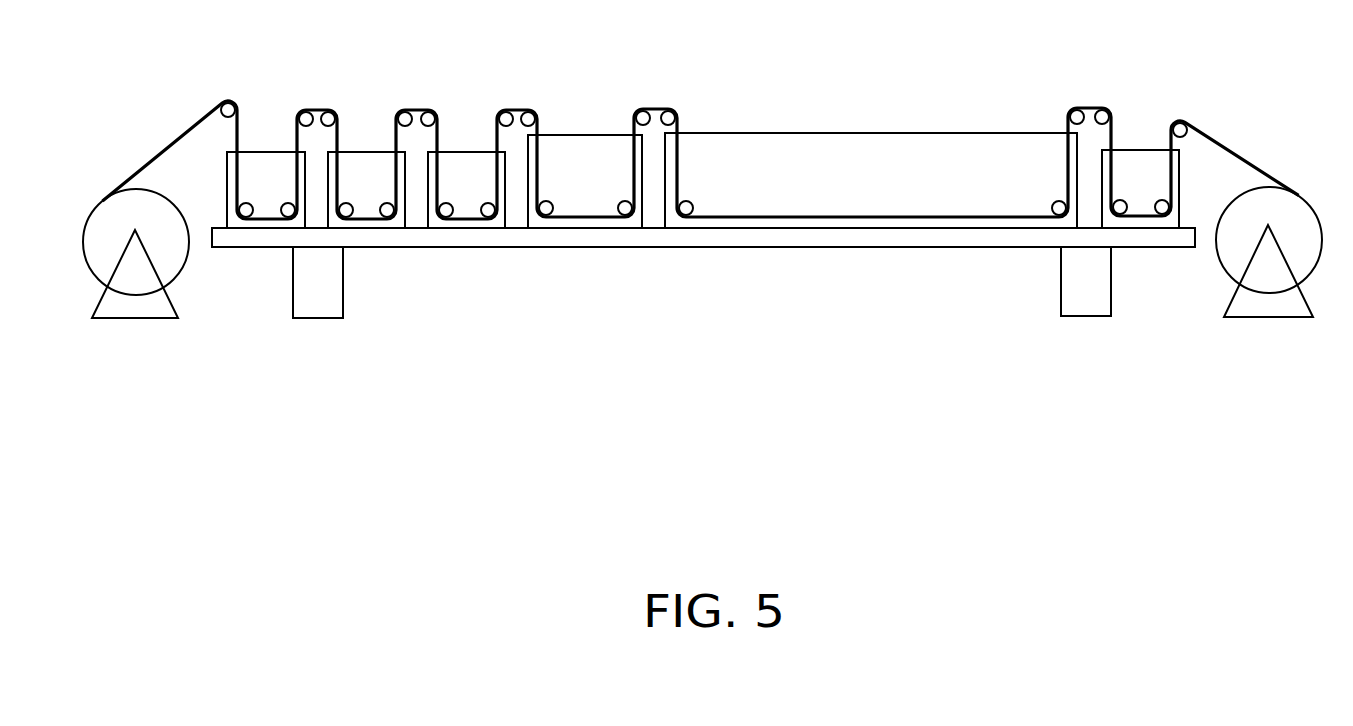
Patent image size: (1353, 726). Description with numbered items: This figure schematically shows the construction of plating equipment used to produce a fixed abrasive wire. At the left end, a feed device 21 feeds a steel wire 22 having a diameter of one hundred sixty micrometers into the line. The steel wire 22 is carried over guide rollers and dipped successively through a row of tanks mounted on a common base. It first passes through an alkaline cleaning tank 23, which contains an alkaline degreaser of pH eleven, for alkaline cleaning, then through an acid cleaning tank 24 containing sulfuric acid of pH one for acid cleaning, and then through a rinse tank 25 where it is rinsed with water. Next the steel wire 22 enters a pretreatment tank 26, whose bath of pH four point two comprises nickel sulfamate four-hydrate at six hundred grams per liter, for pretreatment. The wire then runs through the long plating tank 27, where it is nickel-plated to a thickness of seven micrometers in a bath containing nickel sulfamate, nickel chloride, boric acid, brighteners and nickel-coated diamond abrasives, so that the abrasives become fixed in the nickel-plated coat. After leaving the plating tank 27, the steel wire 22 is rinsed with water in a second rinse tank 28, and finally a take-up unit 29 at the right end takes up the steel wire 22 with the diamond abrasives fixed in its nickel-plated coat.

The feed device 21 is at (100, 200).
The steel wire 22 is at (163, 152).
The alkaline cleaning tank 23 is at (263, 152).
The acid cleaning tank 24 is at (366, 152).
The rinse tank 25 is at (465, 152).
The pretreatment tank 26 is at (588, 135).
The plating tank 27 is at (881, 134).
The rinse tank 28 is at (1140, 149).
The take-up unit 29 is at (1312, 207).